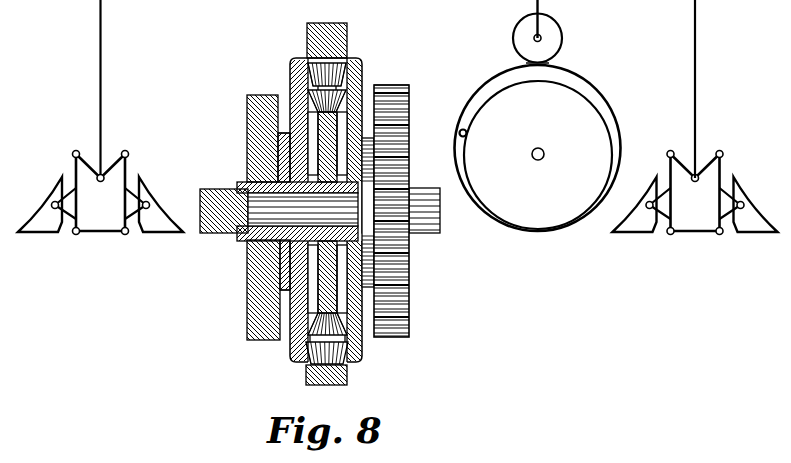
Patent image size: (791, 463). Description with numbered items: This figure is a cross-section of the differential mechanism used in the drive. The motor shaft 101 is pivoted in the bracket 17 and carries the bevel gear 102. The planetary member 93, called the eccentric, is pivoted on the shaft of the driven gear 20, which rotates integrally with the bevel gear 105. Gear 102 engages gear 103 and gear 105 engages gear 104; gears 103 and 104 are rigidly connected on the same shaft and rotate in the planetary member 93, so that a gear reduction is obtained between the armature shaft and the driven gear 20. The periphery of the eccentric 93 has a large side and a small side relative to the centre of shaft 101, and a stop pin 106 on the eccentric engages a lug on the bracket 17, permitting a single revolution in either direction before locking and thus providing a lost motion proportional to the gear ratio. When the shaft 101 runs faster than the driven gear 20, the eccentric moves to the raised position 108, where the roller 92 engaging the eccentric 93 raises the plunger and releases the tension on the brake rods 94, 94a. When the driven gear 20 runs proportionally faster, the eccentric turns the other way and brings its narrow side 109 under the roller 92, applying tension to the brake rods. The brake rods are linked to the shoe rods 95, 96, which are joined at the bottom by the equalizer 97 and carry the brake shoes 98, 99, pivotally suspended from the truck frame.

The bracket 17 is at (261, 95).
The driven gear 20 is at (398, 284).
The roller 92 is at (558, 28).
The planetary member (eccentric) 93 is at (352, 22).
The brake rod 94 is at (697, 28).
The brake rod 94a is at (103, 84).
The shoe rod 95 is at (72, 158).
The shoe rod 96 is at (130, 163).
The equalizer 97 is at (100, 235).
The brake shoe 98 is at (35, 240).
The brake shoe 99 is at (157, 227).
The motor shaft 101 is at (229, 189).
The bevel gear 102 is at (290, 352).
The gear 103 is at (337, 333).
The gear 104 is at (310, 364).
The bevel gear 105 is at (362, 72).
The stop pin 106 is at (460, 135).
The raised position 108 is at (535, 63).
The lower section (narrow side) 109 is at (537, 231).